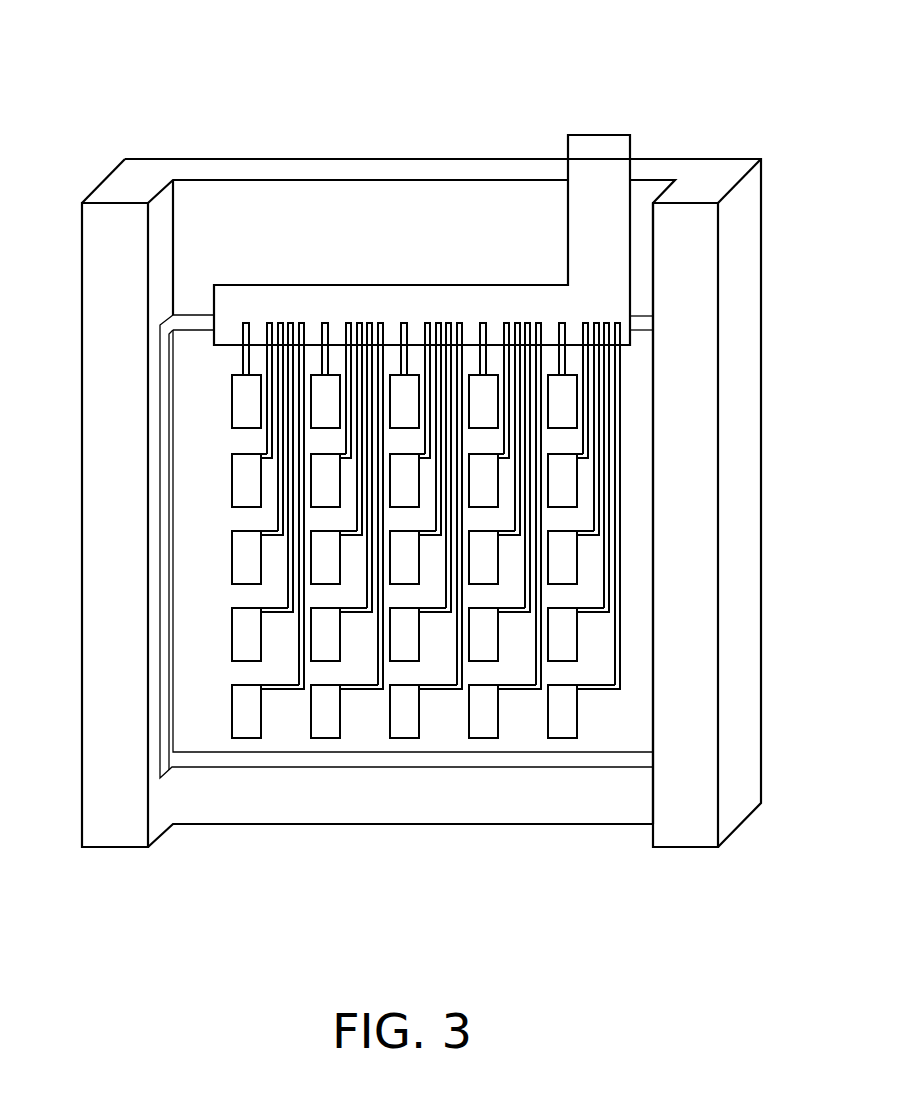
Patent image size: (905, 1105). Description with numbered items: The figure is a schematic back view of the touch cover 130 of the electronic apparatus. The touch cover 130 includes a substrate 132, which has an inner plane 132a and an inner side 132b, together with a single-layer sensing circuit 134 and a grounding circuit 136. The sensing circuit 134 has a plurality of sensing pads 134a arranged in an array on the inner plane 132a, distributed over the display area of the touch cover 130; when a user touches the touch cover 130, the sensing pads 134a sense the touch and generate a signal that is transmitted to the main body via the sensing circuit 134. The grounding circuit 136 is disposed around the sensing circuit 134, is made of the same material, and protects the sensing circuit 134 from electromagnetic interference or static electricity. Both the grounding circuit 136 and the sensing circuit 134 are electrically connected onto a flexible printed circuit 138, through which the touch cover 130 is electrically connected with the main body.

The touch cover 130 is at (707, 52).
The substrate 132 is at (716, 175).
The inner plane 132a is at (348, 225).
The side wall of frame 132b is at (152, 255).
The sensing circuit 134 is at (518, 683).
The sensing pads 134a is at (405, 727).
The grounding circuit 136 is at (287, 758).
The flexible printed circuit 138 is at (585, 222).